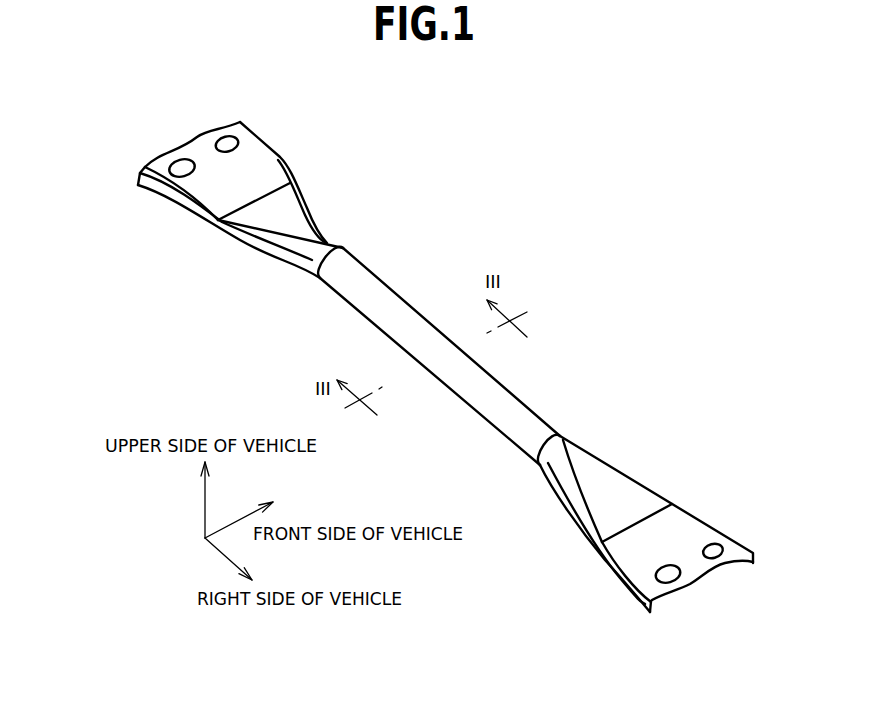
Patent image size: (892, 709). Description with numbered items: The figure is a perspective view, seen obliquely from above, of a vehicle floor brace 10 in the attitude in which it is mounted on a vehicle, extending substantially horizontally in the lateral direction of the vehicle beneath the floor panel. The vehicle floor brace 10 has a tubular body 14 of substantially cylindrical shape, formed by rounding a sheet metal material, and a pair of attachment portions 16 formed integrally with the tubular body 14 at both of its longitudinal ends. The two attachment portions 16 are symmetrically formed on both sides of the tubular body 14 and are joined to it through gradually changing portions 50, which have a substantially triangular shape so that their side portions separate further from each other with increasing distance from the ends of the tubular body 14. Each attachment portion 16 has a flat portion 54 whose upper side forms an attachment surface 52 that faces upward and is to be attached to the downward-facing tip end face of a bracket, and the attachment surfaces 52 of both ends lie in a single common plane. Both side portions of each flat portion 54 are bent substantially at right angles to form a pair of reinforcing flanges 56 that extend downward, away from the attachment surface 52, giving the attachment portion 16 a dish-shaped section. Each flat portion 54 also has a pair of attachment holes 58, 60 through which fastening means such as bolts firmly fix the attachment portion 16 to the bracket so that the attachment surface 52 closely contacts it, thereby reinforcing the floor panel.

The vehicle floor brace 10 is at (569, 237).
The tubular body 14 is at (462, 380).
The attachment portion 16 is at (284, 135).
The gradually changing portion 50 is at (263, 218).
The attachment surface 52 is at (242, 172).
The flat portion 54 is at (187, 131).
The reinforcing flange 56 is at (158, 200).
The attachment hole 58 is at (183, 172).
The attachment hole 60 is at (223, 134).